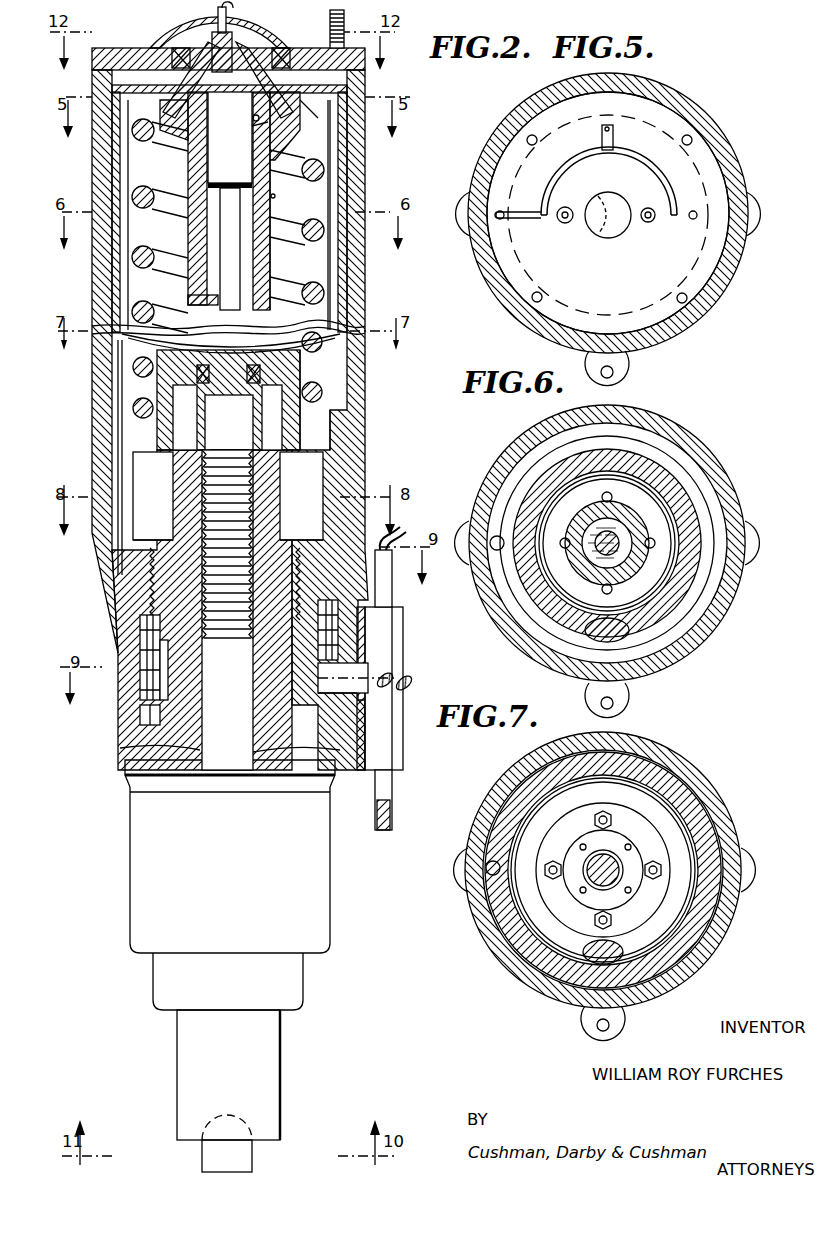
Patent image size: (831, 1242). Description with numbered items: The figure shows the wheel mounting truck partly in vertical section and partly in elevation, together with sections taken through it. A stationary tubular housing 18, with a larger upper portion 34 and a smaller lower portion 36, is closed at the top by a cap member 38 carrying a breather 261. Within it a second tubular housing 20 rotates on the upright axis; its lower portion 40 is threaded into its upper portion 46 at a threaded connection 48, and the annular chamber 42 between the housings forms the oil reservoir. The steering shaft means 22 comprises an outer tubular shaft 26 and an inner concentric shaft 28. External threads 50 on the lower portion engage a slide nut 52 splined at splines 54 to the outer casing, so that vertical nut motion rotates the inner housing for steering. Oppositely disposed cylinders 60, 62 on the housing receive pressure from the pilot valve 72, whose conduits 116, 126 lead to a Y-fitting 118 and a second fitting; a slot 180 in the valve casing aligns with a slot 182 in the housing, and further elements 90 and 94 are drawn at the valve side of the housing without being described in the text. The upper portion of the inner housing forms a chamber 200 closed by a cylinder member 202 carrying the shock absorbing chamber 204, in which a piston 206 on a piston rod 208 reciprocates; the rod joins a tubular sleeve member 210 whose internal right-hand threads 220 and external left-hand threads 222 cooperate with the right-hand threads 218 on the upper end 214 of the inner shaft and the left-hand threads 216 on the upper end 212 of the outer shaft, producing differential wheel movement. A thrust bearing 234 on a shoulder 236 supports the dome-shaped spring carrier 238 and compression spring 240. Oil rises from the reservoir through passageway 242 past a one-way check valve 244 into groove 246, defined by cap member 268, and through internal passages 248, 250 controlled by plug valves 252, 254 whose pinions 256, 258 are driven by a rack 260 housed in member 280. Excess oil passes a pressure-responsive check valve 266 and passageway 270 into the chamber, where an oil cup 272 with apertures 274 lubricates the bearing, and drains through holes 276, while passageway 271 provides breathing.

In FIG. 5, the stationary tubular housing 18 is at (735, 180).
In FIG. 6, the stationary tubular housing 18 is at (700, 455).
In FIG. 7, the stationary tubular housing 18 is at (720, 816).
In FIG. 2, the second tubular housing 20 is at (350, 290).
In FIG. 5, the second tubular housing 20 is at (710, 298).
In FIG. 6, the second tubular housing 20 is at (700, 472).
In FIG. 7, the second tubular housing 20 is at (712, 804).
In FIG. 2, the steering shaft means 22 is at (292, 1085).
In FIG. 2, the outer tubular shaft 26 is at (280, 1052).
In FIG. 5, the outer tubular shaft 26 is at (614, 200).
In FIG. 2, the inner concentric shaft 28 is at (202, 1157).
In FIG. 2, the upper portion 34 is at (366, 415).
In FIG. 2, the lower portion 36 is at (130, 830).
In FIG. 2, the cap member 38 is at (160, 56).
In FIG. 2, the lower portion 40 is at (148, 640).
In FIG. 2, the chamber 42 is at (148, 722).
In FIG. 2, the upper portion 46 is at (340, 462).
In FIG. 2, the threaded connection 48 is at (286, 540).
In FIG. 2, the external threads 50 is at (150, 718).
In FIG. 2, the slide nut 52 is at (150, 660).
In FIG. 2, the splines 54 is at (325, 648).
In FIG. 5, the cylinder 60 is at (754, 232).
In FIG. 6, the cylinder 60 is at (752, 538).
In FIG. 7, the cylinder 60 is at (748, 888).
In FIG. 5, the cylinder 62 is at (464, 229).
In FIG. 6, the cylinder 62 is at (463, 536).
In FIG. 7, the cylinder 62 is at (466, 888).
In FIG. 2, the pilot valve 72 is at (403, 752).
In FIG. 5, the pilot valve 72 is at (636, 370).
In FIG. 6, the pilot valve 72 is at (640, 697).
In FIG. 7, the pilot valve 72 is at (635, 1020).
In FIG. 2, the tube 90 is at (390, 554).
In FIG. 2, the conduit 94 is at (391, 830).
In FIG. 2, the conduit 116 is at (405, 683).
In FIG. 2, the Y-fitting 118 is at (366, 396).
In FIG. 2, the conduit 126 is at (398, 690).
In FIG. 2, the slot 180 is at (368, 670).
In FIG. 2, the slot 182 is at (322, 722).
In FIG. 2, the chamber 200 is at (340, 160).
In FIG. 2, the cylinder member 202 is at (282, 138).
In FIG. 6, the cylinder member 202 is at (632, 520).
In FIG. 2, the shock absorbing chamber 204 is at (262, 158).
In FIG. 6, the shock absorbing chamber 204 is at (625, 535).
In FIG. 2, the piston 206 is at (270, 212).
In FIG. 2, the piston rod 208 is at (242, 268).
In FIG. 6, the piston rod 208 is at (618, 540).
In FIG. 2, the tubular sleeve member 210 is at (262, 412).
In FIG. 2, the upper end 212 is at (178, 506).
In FIG. 2, the upper end 214 is at (229, 446).
In FIG. 2, the left-hand threads 216 is at (280, 468).
In FIG. 2, the right-hand threads 218 is at (280, 484).
In FIG. 2, the internal right-hand threads 220 is at (282, 515).
In FIG. 2, the left-hand threads 222 is at (280, 500).
In FIG. 2, the thrust bearing 234 is at (305, 372).
In FIG. 2, the shoulder 236 is at (305, 386).
In FIG. 2, the dome-shaped spring carrier 238 is at (332, 440).
In FIG. 2, the compression spring 240 is at (332, 230).
In FIG. 6, the compression spring 240 is at (695, 590).
In FIG. 7, the compression spring 240 is at (692, 790).
In FIG. 2, the passageway 242 is at (118, 400).
In FIG. 5, the passageway 242 is at (497, 210).
In FIG. 2, the one-way check valve 244 is at (150, 550).
In FIG. 2, the groove 246 is at (118, 95).
In FIG. 5, the groove 246 is at (670, 185).
In FIG. 2, the internal passage 248 is at (196, 173).
In FIG. 2, the internal passage 250 is at (255, 150).
In FIG. 2, the plug valve 252 is at (254, 117).
In FIG. 5, the plug valve 252 is at (566, 206).
In FIG. 2, the plug valve 254 is at (256, 126).
In FIG. 5, the plug valve 254 is at (648, 223).
In FIG. 2, the pinion 256 is at (213, 33).
In FIG. 2, the pinion 258 is at (245, 50).
In FIG. 2, the rack 260 is at (232, 18).
In FIG. 2, the breather 261 is at (342, 40).
In FIG. 5, the pressure-responsive check valve 266 is at (632, 115).
In FIG. 2, the cap member 268 is at (345, 93).
In FIG. 5, the cap member 268 is at (710, 268).
In FIG. 2, the passageway 270 is at (275, 197).
In FIG. 5, the passageway 270 is at (690, 205).
In FIG. 2, the passageway 271 is at (320, 122).
In FIG. 2, the oil cup 272 is at (262, 336).
In FIG. 7, the oil cup 272 is at (668, 848).
In FIG. 2, the apertures 274 is at (205, 335).
In FIG. 7, the apertures 274 is at (632, 845).
In FIG. 2, the holes 276 is at (322, 585).
In FIG. 2, the member 280 is at (155, 80).